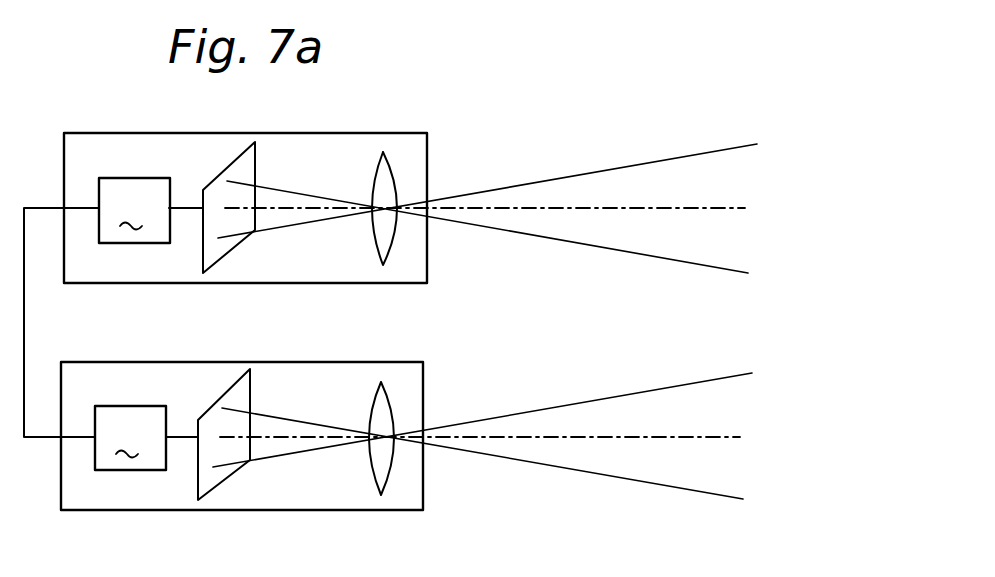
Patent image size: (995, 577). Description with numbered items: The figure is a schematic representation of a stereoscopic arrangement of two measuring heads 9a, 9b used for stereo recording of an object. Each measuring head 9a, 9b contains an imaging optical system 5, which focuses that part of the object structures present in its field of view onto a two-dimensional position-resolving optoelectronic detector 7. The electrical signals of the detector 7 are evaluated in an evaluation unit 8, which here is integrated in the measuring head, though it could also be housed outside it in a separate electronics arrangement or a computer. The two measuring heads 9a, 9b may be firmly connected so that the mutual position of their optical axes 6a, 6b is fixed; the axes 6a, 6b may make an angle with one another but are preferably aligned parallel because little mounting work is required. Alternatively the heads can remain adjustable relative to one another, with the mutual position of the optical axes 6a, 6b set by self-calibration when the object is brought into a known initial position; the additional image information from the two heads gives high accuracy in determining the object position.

The imaging optical system 5 is at (383, 172).
The optical axis 6a is at (611, 211).
The optical axis 6b is at (610, 440).
The two-dimensional position-resolving optoelectronic detector 7 is at (243, 162).
The evaluation unit 8 is at (132, 324).
The measuring head 9a is at (103, 285).
The measuring head 9b is at (143, 362).